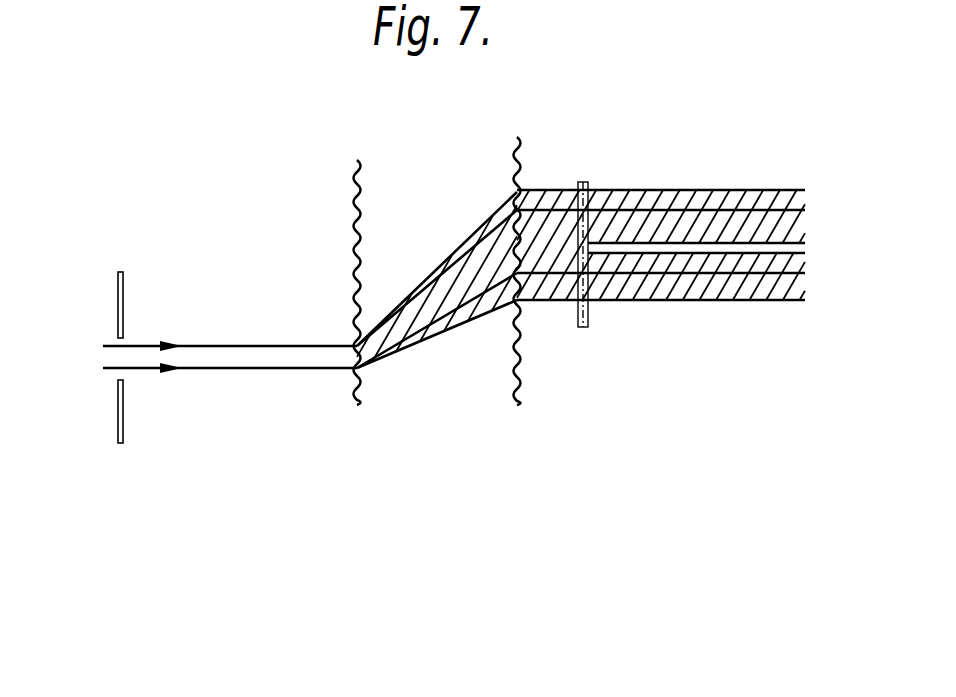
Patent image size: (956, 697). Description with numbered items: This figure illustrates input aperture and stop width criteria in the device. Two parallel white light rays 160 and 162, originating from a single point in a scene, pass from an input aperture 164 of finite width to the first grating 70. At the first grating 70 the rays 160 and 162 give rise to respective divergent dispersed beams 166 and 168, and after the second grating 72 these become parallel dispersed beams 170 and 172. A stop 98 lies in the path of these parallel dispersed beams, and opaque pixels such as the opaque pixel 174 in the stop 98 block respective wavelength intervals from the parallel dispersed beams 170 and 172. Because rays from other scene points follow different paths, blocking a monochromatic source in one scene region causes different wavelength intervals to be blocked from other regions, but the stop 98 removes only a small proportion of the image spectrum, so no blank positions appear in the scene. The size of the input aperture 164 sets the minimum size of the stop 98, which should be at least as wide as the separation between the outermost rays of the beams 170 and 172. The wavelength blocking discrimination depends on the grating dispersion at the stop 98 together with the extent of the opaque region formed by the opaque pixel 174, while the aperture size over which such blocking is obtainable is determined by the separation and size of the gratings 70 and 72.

The first grating 70 is at (357, 405).
The second grating 72 is at (517, 405).
The stop 98 is at (588, 318).
The white light ray 160 is at (248, 368).
The white light ray 162 is at (250, 346).
The input aperture 164 is at (118, 272).
The divergent dispersed beam 166 is at (450, 327).
The divergent dispersed beam 168 is at (462, 243).
The parallel dispersed beam 170 is at (741, 300).
The parallel dispersed beam 172 is at (740, 190).
The opaque pixel 174 is at (580, 248).